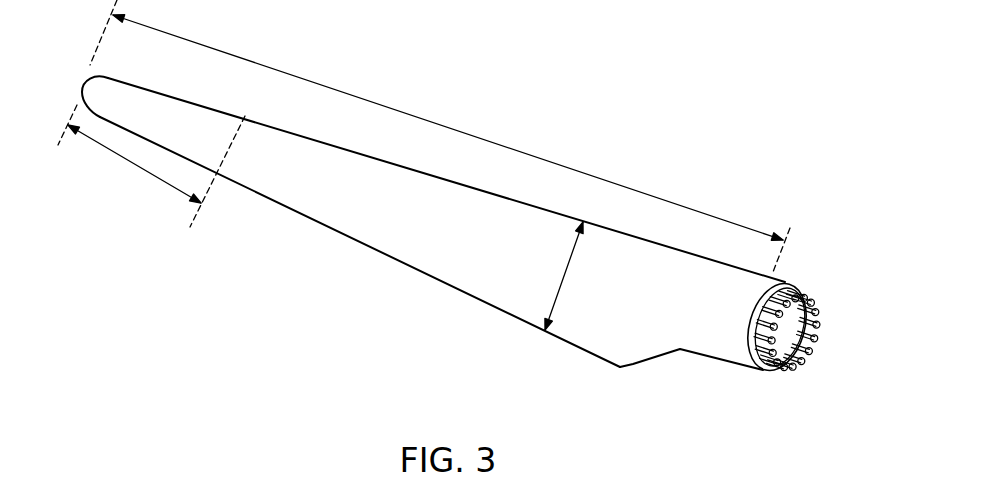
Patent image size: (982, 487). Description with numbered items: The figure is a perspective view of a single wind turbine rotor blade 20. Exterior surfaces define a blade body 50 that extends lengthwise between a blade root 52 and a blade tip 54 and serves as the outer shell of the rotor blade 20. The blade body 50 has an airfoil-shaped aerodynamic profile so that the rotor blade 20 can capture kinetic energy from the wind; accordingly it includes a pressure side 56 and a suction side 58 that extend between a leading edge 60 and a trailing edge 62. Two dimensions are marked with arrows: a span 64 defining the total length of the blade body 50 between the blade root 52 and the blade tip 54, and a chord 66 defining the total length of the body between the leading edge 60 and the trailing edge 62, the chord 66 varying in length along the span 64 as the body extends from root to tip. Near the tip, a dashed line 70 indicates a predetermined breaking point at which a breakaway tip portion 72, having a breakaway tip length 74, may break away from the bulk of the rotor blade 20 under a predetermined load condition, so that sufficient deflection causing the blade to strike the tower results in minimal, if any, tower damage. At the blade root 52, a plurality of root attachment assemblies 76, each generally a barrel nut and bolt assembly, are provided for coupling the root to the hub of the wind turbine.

The rotor blade 20 is at (645, 144).
The blade body 50 is at (349, 160).
The blade root 52 is at (722, 363).
The blade tip 54 is at (82, 84).
The pressure side 56 is at (457, 286).
The suction side 58 is at (264, 228).
The leading edge 60 is at (318, 139).
The trailing edge 62 is at (347, 245).
The span 64 is at (419, 116).
The chord 66 is at (563, 282).
The dashed line 70 is at (243, 120).
The breakaway tip portion 72 is at (122, 90).
The breakaway tip length 74 is at (135, 167).
The root attachment assembly 76 is at (832, 314).